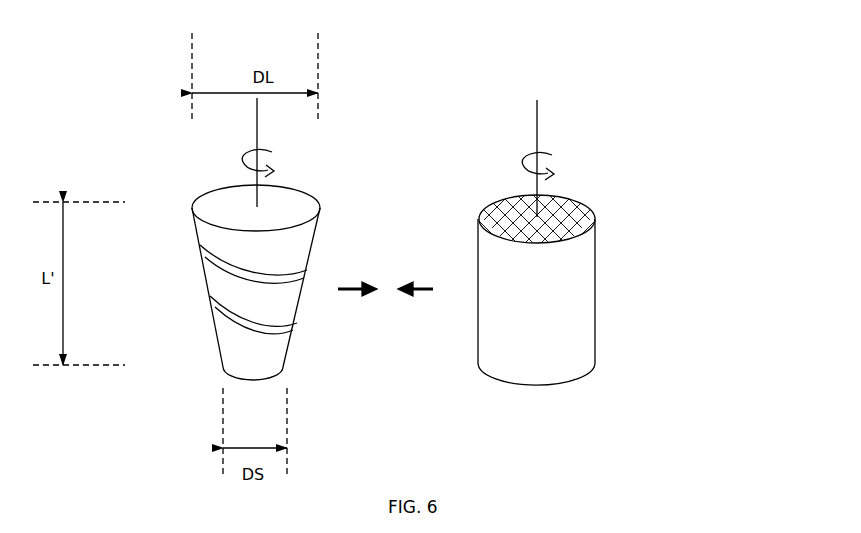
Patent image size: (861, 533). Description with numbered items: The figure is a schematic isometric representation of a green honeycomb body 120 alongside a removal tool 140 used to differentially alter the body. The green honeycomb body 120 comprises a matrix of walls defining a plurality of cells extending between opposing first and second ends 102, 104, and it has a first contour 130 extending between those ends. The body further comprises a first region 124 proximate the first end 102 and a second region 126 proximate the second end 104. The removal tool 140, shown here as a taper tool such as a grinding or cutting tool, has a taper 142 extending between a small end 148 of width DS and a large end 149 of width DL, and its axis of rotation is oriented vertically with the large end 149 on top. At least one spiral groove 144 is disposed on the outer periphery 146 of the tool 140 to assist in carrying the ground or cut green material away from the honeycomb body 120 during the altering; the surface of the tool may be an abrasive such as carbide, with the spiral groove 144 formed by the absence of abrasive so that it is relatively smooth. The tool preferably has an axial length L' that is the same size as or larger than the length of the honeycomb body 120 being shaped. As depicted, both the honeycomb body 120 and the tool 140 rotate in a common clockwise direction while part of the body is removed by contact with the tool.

The first end 102 is at (567, 382).
The second end 104 is at (590, 205).
The green honeycomb body 120 is at (626, 269).
The first region 124 is at (570, 188).
The second region 126 is at (579, 389).
The first contour 130 is at (597, 283).
The removal tool 140 is at (248, 260).
The taper 142 is at (293, 354).
The spiral groove 144 is at (262, 270).
The outer periphery 146 is at (272, 300).
The small end 148 is at (280, 372).
The large end 149 is at (312, 193).